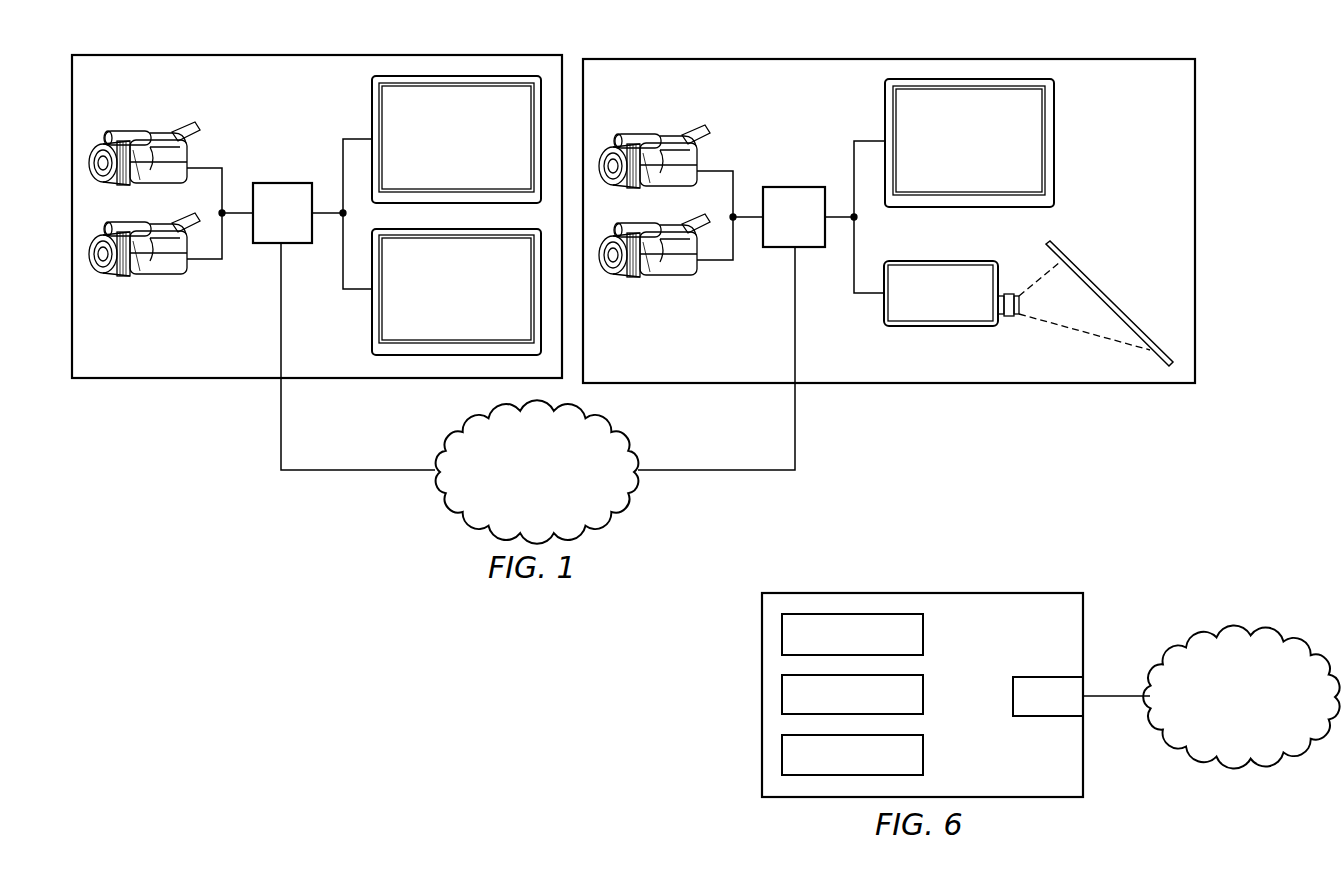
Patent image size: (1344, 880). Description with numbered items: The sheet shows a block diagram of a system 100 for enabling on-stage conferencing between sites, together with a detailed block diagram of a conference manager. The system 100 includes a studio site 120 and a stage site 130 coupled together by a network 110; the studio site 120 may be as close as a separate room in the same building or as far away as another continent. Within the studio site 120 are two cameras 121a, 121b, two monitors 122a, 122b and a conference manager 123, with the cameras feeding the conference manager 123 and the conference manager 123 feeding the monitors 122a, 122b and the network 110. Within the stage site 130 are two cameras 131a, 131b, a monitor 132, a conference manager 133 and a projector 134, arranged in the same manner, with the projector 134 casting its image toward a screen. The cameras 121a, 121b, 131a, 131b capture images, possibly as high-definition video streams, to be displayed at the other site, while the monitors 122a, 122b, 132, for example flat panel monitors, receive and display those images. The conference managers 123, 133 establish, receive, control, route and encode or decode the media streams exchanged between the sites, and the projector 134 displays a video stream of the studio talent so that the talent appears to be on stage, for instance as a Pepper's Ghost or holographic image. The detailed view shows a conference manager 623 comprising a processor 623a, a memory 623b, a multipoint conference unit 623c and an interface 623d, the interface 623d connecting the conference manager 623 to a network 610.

In FIG. 1, the system 100 is at (195, 448).
In FIG. 1, the network 110 is at (450, 510).
In FIG. 1, the studio site 120 is at (110, 54).
In FIG. 1, the camera 121a is at (150, 129).
In FIG. 1, the camera 121b is at (142, 276).
In FIG. 1, the monitor 122a is at (372, 108).
In FIG. 1, the monitor 122b is at (372, 318).
In FIG. 1, the conference manager 123 is at (270, 182).
In FIG. 1, the stage site 130 is at (1140, 58).
In FIG. 1, the camera 131a is at (660, 132).
In FIG. 1, the camera 131b is at (652, 278).
In FIG. 1, the monitor 132 is at (1055, 116).
In FIG. 1, the conference manager 133 is at (810, 186).
In FIG. 1, the projector 134 is at (940, 328).
In FIG. 6, the network 610 is at (1248, 632).
In FIG. 6, the conference manager 623 is at (1028, 592).
In FIG. 6, the processor 623a is at (925, 634).
In FIG. 6, the memory 623b is at (925, 695).
In FIG. 6, the multipoint conference unit 623c is at (925, 755).
In FIG. 6, the interface 623d is at (1044, 676).